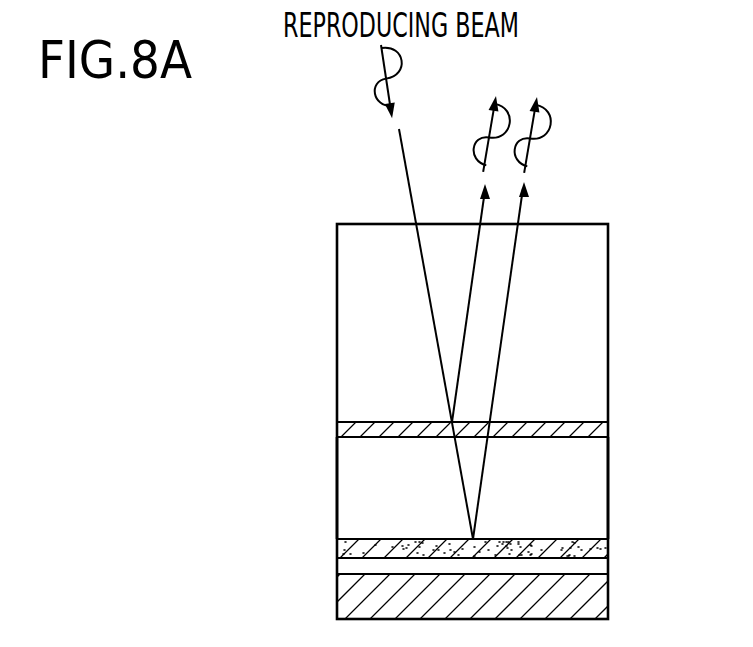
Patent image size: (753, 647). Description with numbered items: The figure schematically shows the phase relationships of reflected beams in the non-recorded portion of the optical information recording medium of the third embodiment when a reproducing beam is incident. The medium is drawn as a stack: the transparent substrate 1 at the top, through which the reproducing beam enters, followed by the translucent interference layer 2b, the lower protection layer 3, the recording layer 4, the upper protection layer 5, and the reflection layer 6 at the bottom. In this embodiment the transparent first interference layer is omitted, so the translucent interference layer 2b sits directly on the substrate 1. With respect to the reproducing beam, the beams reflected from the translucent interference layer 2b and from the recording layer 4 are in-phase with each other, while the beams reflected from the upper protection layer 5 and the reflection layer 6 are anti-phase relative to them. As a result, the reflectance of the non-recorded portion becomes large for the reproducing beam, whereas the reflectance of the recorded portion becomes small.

The transparent substrate 1 is at (602, 334).
The translucent interference layer 2b is at (602, 436).
The lower protection layer 3 is at (602, 502).
The recording layer 4 is at (602, 552).
The upper protection layer 5 is at (602, 573).
The reflection layer 6 is at (602, 610).